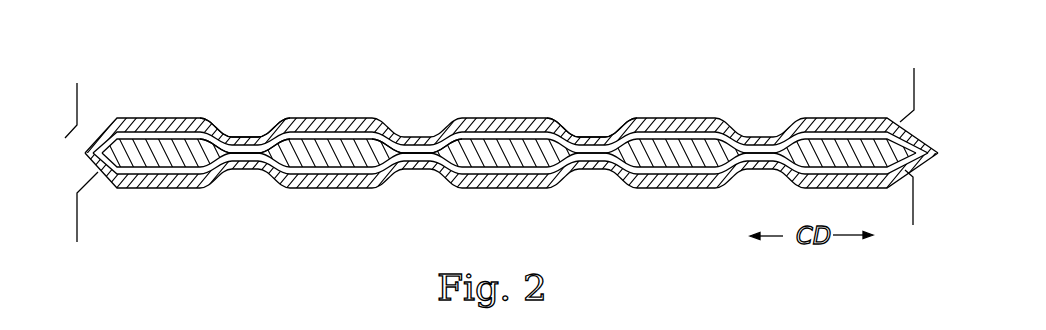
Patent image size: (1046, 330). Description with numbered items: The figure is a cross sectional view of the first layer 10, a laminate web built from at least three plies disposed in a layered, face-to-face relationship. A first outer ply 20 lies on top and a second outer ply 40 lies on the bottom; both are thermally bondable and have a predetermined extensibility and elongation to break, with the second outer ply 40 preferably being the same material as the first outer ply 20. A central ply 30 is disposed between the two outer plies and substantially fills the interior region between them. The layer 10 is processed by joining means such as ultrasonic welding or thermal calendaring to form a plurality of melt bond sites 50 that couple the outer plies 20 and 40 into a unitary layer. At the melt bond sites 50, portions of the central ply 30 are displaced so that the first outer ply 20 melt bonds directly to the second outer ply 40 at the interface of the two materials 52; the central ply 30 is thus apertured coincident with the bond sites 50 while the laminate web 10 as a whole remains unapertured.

The first layer 10 is at (496, 139).
The first outer ply 20 is at (496, 148).
The central ply 30 is at (343, 159).
The second outer ply 40 is at (530, 189).
The melt bond sites 50 is at (247, 124).
The interface of the two materials 52 is at (245, 159).